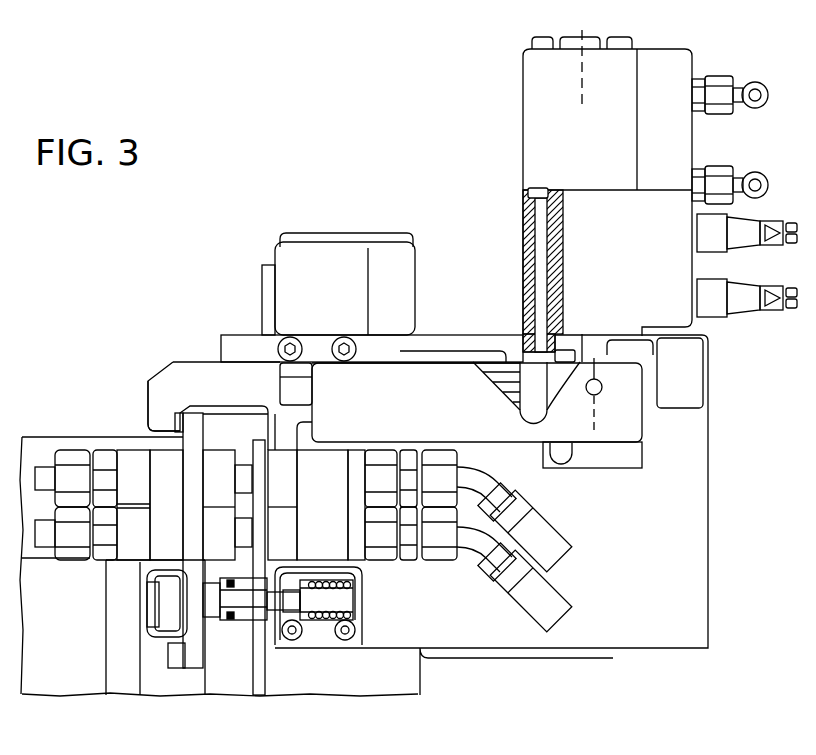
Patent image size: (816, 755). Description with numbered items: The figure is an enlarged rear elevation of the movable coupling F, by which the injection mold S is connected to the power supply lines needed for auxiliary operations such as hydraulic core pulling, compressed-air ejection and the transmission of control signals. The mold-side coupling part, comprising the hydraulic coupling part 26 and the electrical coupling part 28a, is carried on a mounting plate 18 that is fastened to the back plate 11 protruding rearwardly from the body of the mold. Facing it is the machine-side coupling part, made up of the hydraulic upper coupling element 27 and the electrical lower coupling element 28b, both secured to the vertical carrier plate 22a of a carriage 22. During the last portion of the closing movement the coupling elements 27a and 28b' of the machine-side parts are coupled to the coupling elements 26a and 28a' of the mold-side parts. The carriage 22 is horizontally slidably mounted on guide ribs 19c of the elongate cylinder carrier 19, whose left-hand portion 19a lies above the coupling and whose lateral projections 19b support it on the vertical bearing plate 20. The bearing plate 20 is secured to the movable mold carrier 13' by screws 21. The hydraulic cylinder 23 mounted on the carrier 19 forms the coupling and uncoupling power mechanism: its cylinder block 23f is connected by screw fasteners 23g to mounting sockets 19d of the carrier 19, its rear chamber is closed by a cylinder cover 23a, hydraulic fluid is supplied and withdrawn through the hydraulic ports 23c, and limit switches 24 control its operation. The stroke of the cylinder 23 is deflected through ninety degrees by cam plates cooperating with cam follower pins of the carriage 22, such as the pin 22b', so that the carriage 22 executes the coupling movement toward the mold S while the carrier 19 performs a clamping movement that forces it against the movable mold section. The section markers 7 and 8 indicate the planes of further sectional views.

The section line VII-VII 7 is at (582, 20).
The section line VIII-VIII 8 is at (323, 280).
The back plate 11 is at (242, 682).
The movable mold carrier 13' is at (317, 476).
The mounting plate 18 is at (190, 425).
The cylinder carrier 19 is at (194, 352).
The bracket arm 19a is at (158, 402).
The lateral projections 19b is at (683, 383).
The guide ribs 19c is at (292, 400).
The mounting sockets 19d is at (520, 333).
The bearing plate 20 is at (245, 345).
The screws 21 is at (357, 350).
The carriage 22 is at (464, 346).
The carrier plate 22a is at (325, 578).
The bore 22b' is at (646, 401).
The hydraulic cylinder 23 is at (514, 148).
The cylinder cover 23a is at (530, 42).
The hydraulic ports 23c is at (720, 78).
The cylinder block 23f is at (653, 240).
The screw fasteners 23g is at (537, 228).
The limit switches 24 is at (742, 305).
The mold-side hydraulic coupling part 26 is at (107, 545).
The mold-side coupling elements 26a is at (150, 600).
The hydraulic upper coupling element 27 is at (407, 550).
The machine-side coupling elements 27a is at (285, 493).
The mold-side electrical coupling part 28a is at (165, 635).
The mold-side coupling elements 28a' is at (219, 663).
The electrical lower coupling element 28b is at (360, 600).
The machine-side coupling elements 28b' is at (314, 671).
The movable coupling F is at (70, 428).
The injection mold S is at (58, 754).